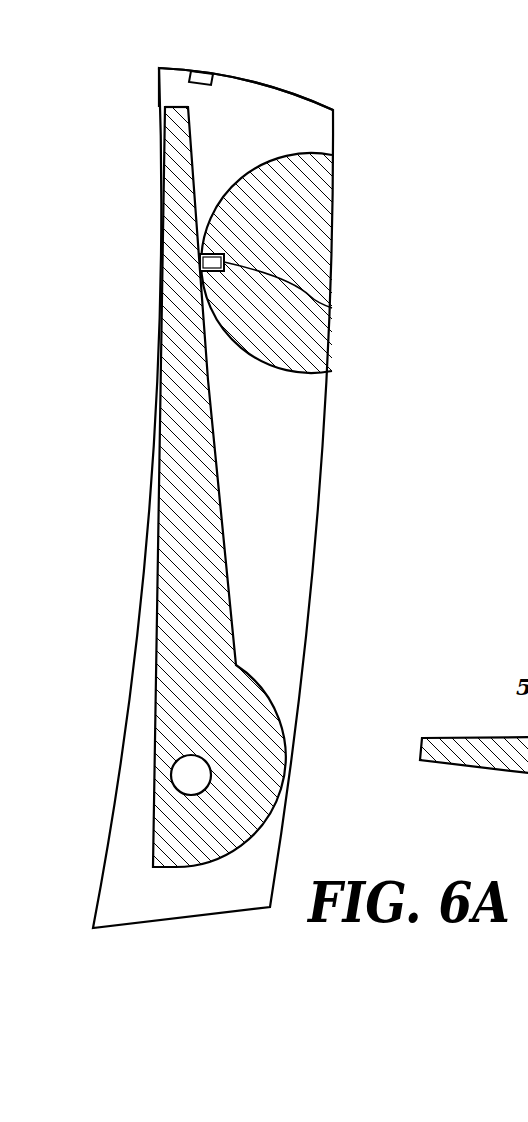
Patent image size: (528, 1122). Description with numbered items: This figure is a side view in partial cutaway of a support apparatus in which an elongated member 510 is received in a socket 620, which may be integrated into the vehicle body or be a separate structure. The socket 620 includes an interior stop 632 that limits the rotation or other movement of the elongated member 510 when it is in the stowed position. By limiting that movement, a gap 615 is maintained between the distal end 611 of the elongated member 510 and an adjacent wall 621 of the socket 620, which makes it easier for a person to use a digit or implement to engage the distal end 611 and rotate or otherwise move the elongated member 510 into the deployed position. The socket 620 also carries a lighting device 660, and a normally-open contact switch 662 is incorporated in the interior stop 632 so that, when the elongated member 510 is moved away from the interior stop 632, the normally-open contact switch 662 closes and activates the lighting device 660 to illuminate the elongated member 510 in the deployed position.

The elongated member 510 is at (158, 368).
The distal end 611 is at (158, 108).
The gap 615 is at (158, 92).
The socket 620 is at (333, 137).
The adjacent wall 621 is at (250, 82).
The interior stop 632 is at (333, 217).
The lighting device 660 is at (205, 82).
The normally-open contact switch 662 is at (332, 308).